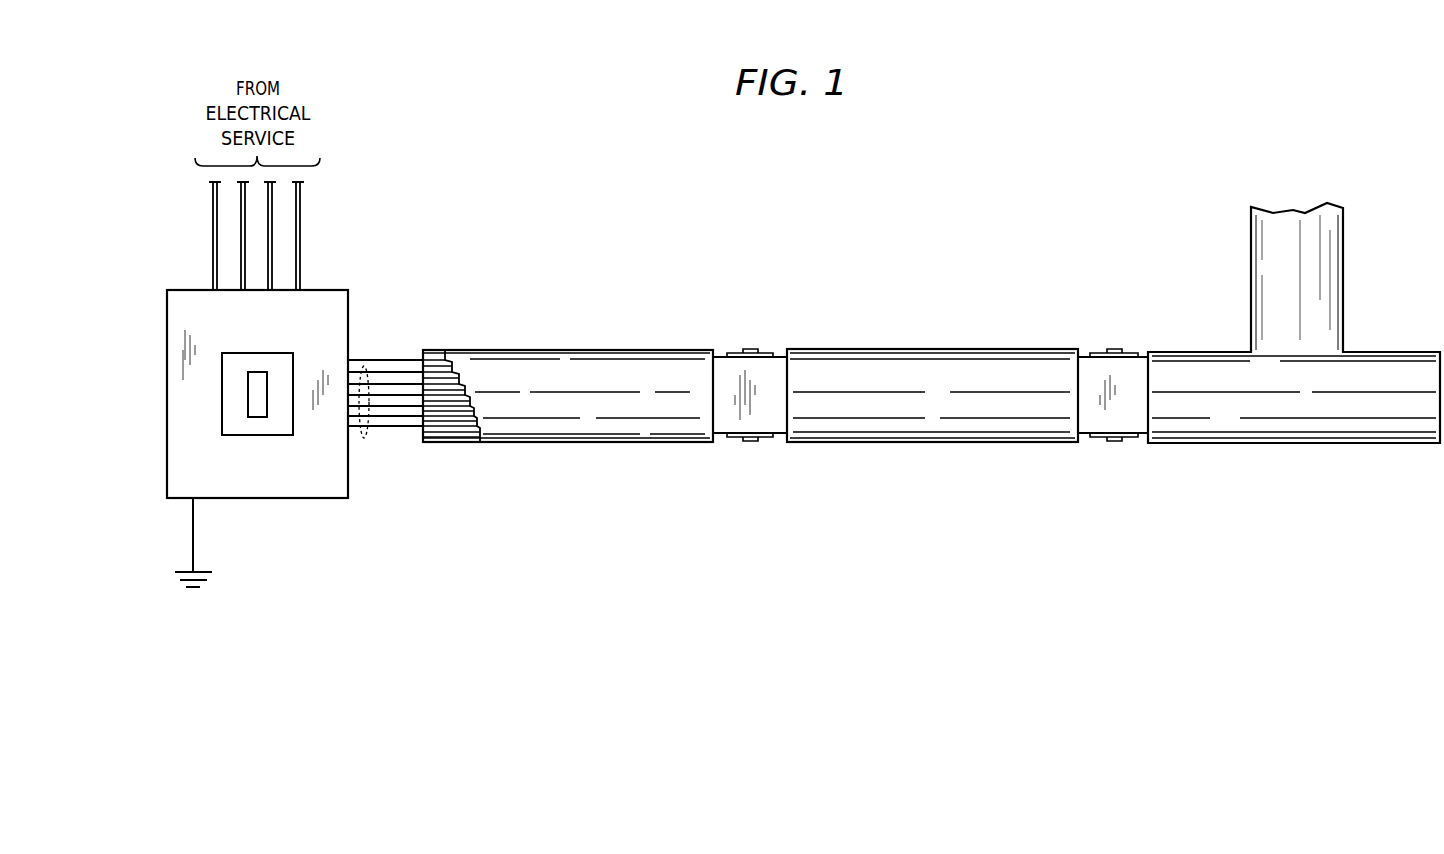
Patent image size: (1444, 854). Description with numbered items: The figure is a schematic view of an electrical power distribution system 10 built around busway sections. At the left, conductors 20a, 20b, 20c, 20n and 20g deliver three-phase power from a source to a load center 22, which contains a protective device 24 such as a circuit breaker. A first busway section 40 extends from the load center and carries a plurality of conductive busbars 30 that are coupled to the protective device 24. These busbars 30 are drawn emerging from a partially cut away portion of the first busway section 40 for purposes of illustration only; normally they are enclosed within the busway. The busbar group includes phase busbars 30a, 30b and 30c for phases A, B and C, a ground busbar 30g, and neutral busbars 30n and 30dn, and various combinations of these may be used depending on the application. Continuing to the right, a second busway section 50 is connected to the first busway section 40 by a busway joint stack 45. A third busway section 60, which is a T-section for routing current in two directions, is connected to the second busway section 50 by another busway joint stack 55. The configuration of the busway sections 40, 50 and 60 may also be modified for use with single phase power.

The electrical power distribution system 10 is at (987, 495).
The conductor 20a is at (241, 220).
The conductor 20b is at (272, 246).
The conductor 20c is at (300, 222).
The conductor 20n is at (213, 204).
The conductor 20g is at (193, 544).
The load center 22 is at (167, 302).
The protective device 24 is at (222, 415).
The conductive busbars 30 is at (364, 366).
The phase busbar 30a is at (412, 377).
The phase busbar 30b is at (359, 411).
The phase busbar 30c is at (376, 399).
The ground busbar 30g is at (378, 367).
The neutral busbar 30n is at (397, 415).
The neutral busbar 30dn is at (413, 428).
The first busway section 40 is at (554, 350).
The busway joint stack 45 is at (749, 349).
The second busway section 50 is at (930, 349).
The busway joint stack 55 is at (1114, 349).
The third busway section 60 is at (1205, 352).